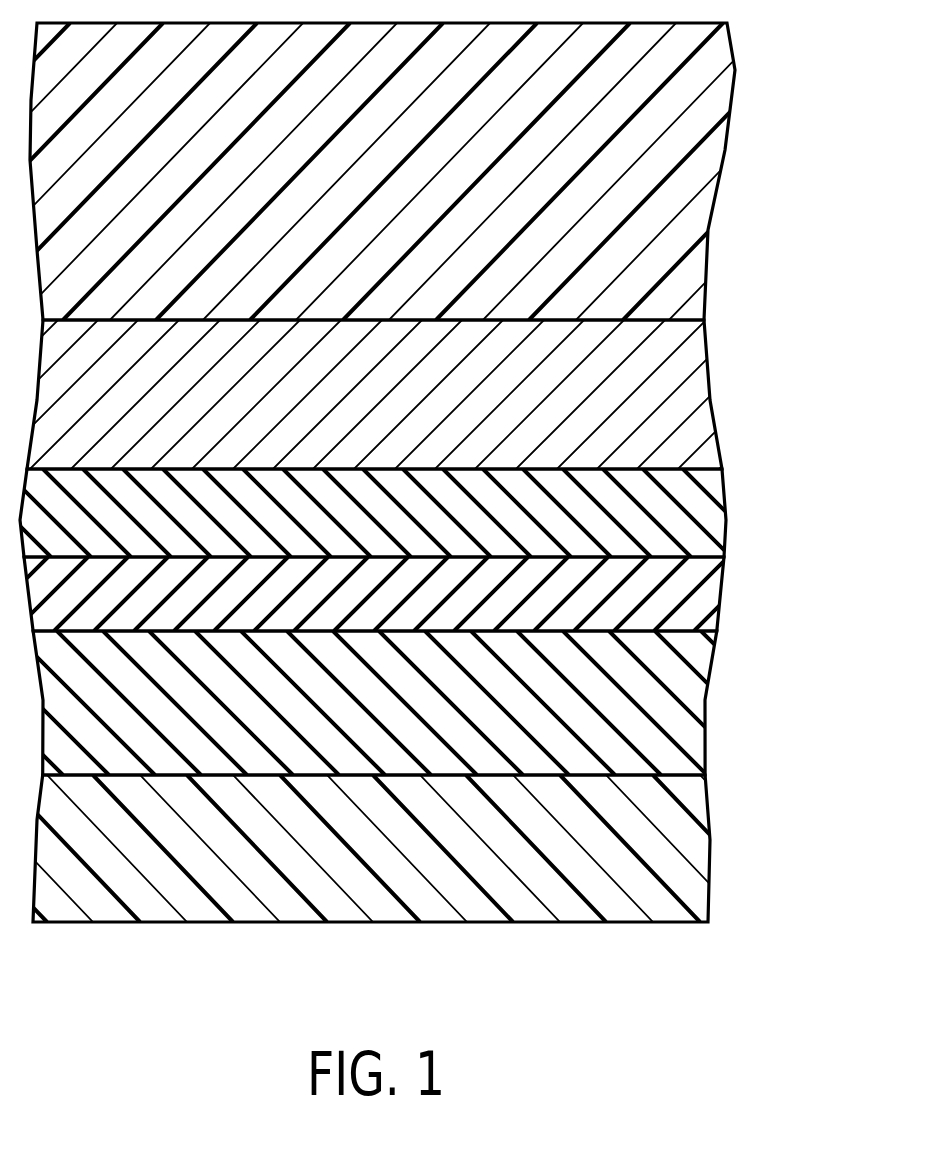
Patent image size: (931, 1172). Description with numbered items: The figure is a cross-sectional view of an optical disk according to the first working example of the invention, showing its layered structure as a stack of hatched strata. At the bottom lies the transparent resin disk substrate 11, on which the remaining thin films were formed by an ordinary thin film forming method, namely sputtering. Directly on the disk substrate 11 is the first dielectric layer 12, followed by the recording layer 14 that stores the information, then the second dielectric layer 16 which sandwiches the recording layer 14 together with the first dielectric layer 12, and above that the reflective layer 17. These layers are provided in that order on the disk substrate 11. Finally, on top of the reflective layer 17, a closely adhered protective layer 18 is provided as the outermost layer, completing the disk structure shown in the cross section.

The protective layer 18 is at (665, 208).
The reflective layer 17 is at (670, 410).
The second dielectric layer 16 is at (702, 522).
The recording layer 14 is at (707, 617).
The first dielectric layer 12 is at (673, 713).
The disk substrate 11 is at (673, 870).